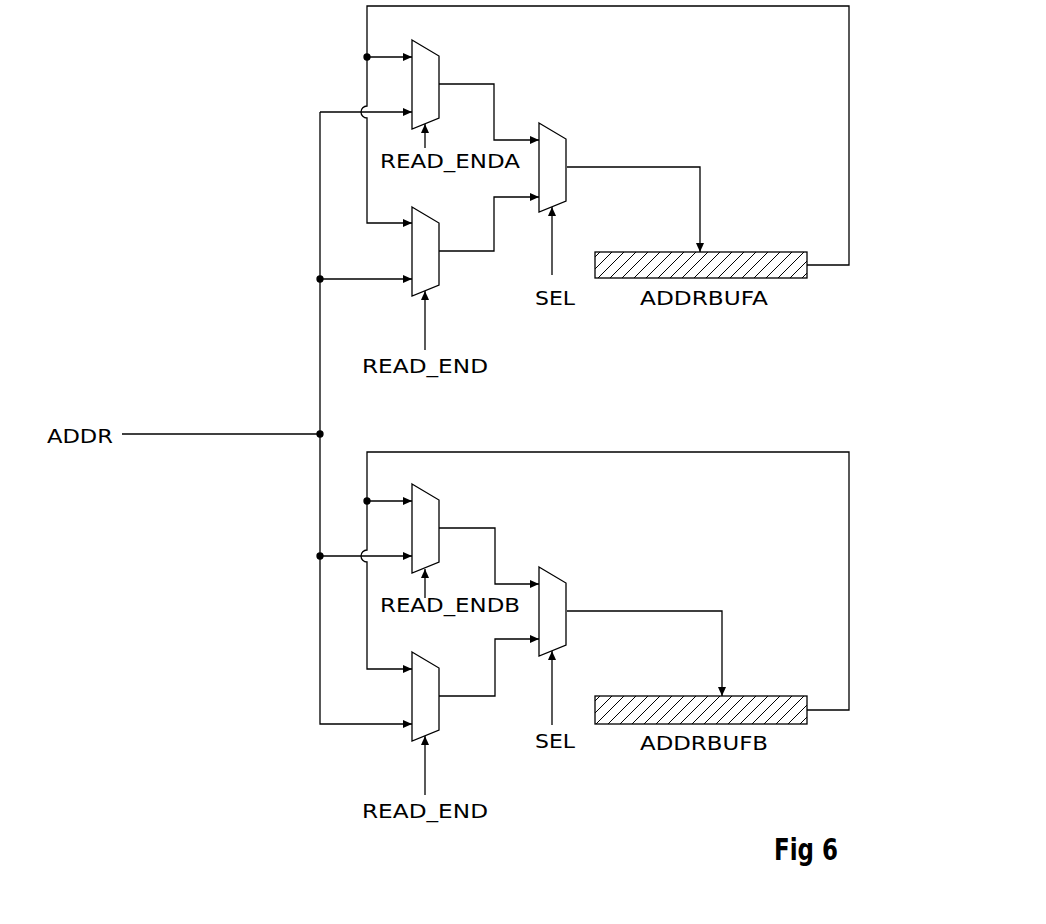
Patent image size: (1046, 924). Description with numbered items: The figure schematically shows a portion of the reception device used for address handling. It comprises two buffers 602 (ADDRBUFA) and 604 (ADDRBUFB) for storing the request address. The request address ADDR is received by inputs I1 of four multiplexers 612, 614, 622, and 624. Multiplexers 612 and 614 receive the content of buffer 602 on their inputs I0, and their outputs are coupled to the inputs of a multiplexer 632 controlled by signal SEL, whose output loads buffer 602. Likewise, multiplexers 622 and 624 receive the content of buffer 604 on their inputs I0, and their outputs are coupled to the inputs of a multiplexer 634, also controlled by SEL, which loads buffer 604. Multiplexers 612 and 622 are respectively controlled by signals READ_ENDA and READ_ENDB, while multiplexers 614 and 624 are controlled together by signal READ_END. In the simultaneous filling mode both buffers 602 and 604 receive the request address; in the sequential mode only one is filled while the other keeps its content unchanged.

The multiplexer 612 is at (427, 86).
The multiplexer 614 is at (425, 252).
The multiplexer 622 is at (382, 533).
The multiplexer 624 is at (425, 696).
The multiplexer 632 is at (558, 159).
The multiplexer 634 is at (560, 604).
The buffer 602 is at (770, 259).
The buffer 604 is at (768, 701).